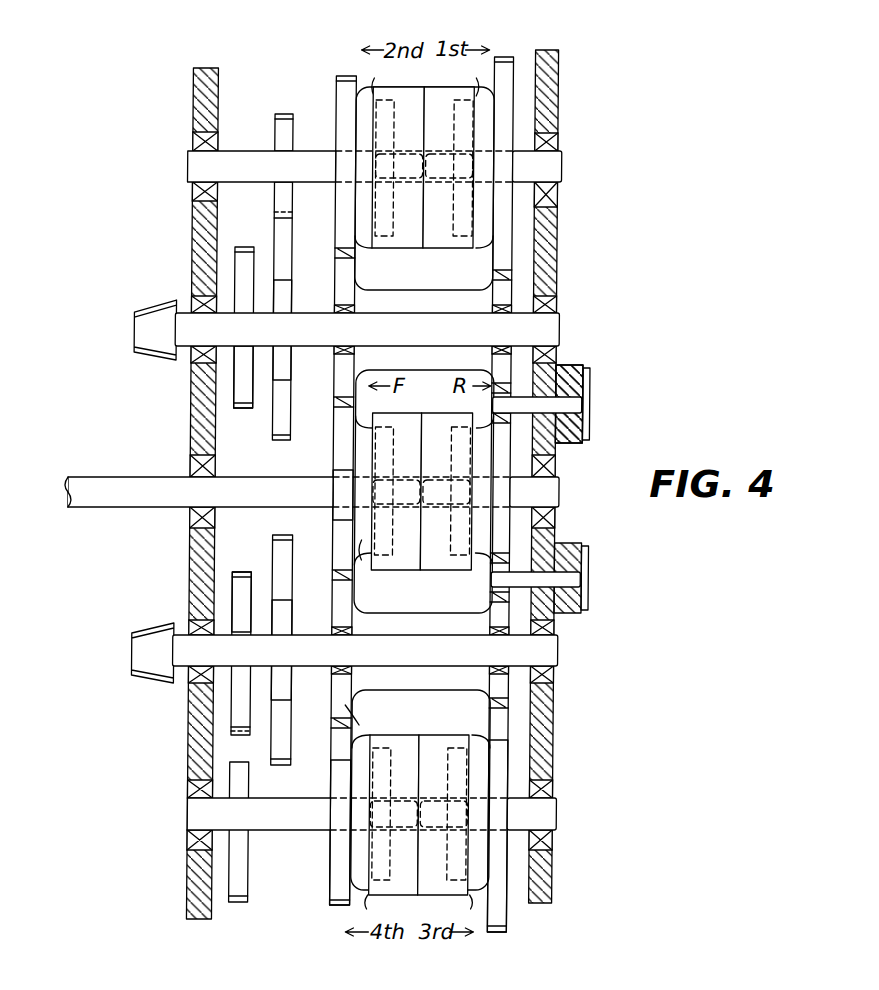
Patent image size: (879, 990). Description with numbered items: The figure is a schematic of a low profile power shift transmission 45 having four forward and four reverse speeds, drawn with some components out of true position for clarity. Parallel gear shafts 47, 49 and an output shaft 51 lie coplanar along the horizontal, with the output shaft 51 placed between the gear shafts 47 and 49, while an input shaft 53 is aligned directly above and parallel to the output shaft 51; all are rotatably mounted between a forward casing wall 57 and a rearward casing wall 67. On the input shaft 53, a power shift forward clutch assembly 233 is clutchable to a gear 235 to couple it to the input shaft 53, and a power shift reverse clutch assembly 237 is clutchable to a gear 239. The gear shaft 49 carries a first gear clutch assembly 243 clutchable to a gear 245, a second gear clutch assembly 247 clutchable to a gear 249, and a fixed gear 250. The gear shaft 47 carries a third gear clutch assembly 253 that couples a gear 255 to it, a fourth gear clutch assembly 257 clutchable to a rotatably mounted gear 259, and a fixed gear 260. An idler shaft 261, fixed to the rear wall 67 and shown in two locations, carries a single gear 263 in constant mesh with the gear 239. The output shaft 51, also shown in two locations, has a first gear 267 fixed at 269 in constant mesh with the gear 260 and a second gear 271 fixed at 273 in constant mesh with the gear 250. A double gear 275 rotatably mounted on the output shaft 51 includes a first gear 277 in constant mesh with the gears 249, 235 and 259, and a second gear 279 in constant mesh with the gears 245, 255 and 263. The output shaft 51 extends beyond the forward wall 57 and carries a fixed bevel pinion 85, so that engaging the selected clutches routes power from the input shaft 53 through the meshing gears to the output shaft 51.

The transmission 45 is at (708, 251).
The gear shaft 47 is at (553, 814).
The gear shaft 49 is at (564, 166).
The output shaft 51 is at (562, 330).
The input shaft 53 is at (114, 477).
The forward casing wall 57 is at (219, 88).
The rearward casing wall 67 is at (559, 68).
The bevel pinion 85 is at (168, 302).
The forward clutch assembly 233 is at (393, 502).
The gear 235 is at (340, 521).
The reverse clutch assembly 237 is at (447, 502).
The gear 239 is at (514, 446).
The first gear clutch assembly 243 is at (449, 155).
The gear 245 is at (514, 63).
The second gear clutch assembly 247 is at (398, 155).
The gear 249 is at (338, 99).
The gear 250 is at (294, 142).
The third gear clutch assembly 253 is at (442, 827).
The gear 255 is at (514, 906).
The fourth gear clutch assembly 257 is at (386, 827).
The gear 259 is at (337, 876).
The gear 260 is at (250, 846).
The idler shaft 261 is at (588, 407).
The gear 263 is at (492, 388).
The first gear 267 is at (256, 406).
The mounting location of first gear 269 is at (246, 318).
The second gear 271 is at (294, 258).
The mounting location of second gear 273 is at (291, 318).
The double gear 275 is at (434, 281).
The first gear of double gear 277 is at (357, 268).
The second gear of double gear 279 is at (483, 283).